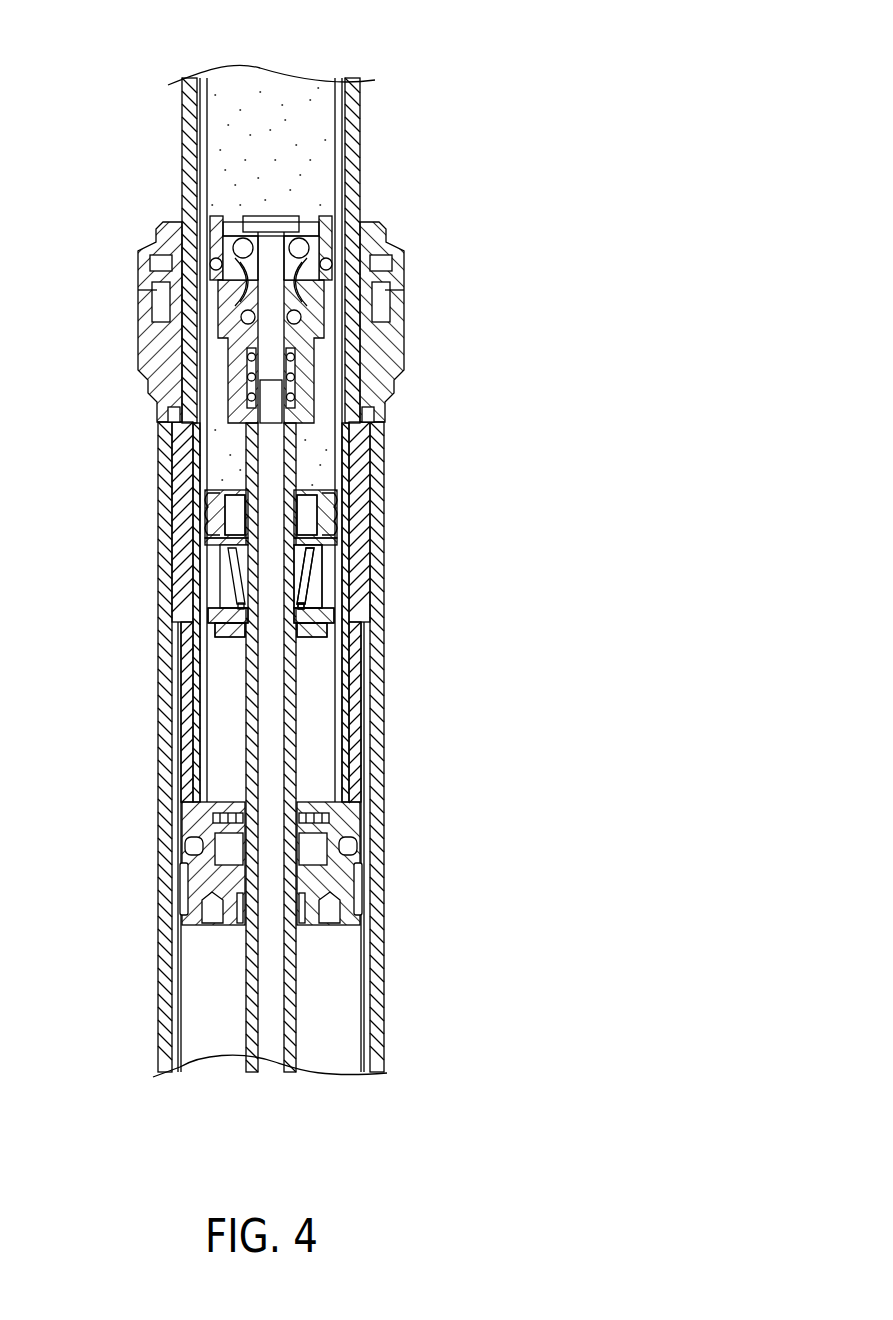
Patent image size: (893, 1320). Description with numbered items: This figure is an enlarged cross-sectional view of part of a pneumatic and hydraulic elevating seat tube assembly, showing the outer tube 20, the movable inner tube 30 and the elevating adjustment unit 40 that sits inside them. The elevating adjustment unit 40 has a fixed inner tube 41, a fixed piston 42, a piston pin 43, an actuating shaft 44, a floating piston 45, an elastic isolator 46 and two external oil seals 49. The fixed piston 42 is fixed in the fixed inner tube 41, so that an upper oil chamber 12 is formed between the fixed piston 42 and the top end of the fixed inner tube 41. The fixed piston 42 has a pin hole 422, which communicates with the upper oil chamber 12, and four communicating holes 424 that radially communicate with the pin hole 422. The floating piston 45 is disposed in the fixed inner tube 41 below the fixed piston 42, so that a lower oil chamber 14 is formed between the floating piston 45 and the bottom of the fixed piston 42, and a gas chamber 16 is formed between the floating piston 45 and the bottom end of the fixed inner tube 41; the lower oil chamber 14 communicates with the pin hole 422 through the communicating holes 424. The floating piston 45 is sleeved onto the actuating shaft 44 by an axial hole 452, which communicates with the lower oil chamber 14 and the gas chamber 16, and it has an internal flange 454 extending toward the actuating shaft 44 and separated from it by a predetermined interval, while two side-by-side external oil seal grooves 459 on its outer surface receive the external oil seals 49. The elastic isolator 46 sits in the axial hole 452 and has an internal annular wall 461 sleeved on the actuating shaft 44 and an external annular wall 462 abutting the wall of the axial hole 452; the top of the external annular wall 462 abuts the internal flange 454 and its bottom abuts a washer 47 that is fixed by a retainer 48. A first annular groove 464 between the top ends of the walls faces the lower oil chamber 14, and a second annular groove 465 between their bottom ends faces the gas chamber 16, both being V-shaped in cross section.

The upper oil chamber 12 is at (297, 100).
The lower oil chamber 14 is at (320, 445).
The gas chamber 16 is at (315, 775).
The outer tube 20 is at (162, 1010).
The movable inner tube 30 is at (352, 730).
The elevating adjustment unit 40 is at (243, 170).
The fixed inner tube 41 is at (348, 128).
The fixed piston 42 is at (307, 368).
The piston pin 43 is at (278, 240).
The actuating shaft 44 is at (267, 977).
The floating piston 45 is at (210, 552).
The elastic isolator 46 is at (318, 568).
The washer 47 is at (320, 615).
The retainer 48 is at (327, 628).
The external oil seal 49 is at (207, 505).
The pin hole 422 is at (282, 268).
The communicating hole 424 is at (227, 296).
The axial hole 452 is at (305, 498).
The internal flange 454 is at (330, 532).
The external oil seal groove 459 is at (185, 432).
The internal annular wall 461 is at (238, 620).
The external annular wall 462 is at (238, 608).
The first annular groove 464 is at (230, 583).
The second annular groove 465 is at (240, 622).